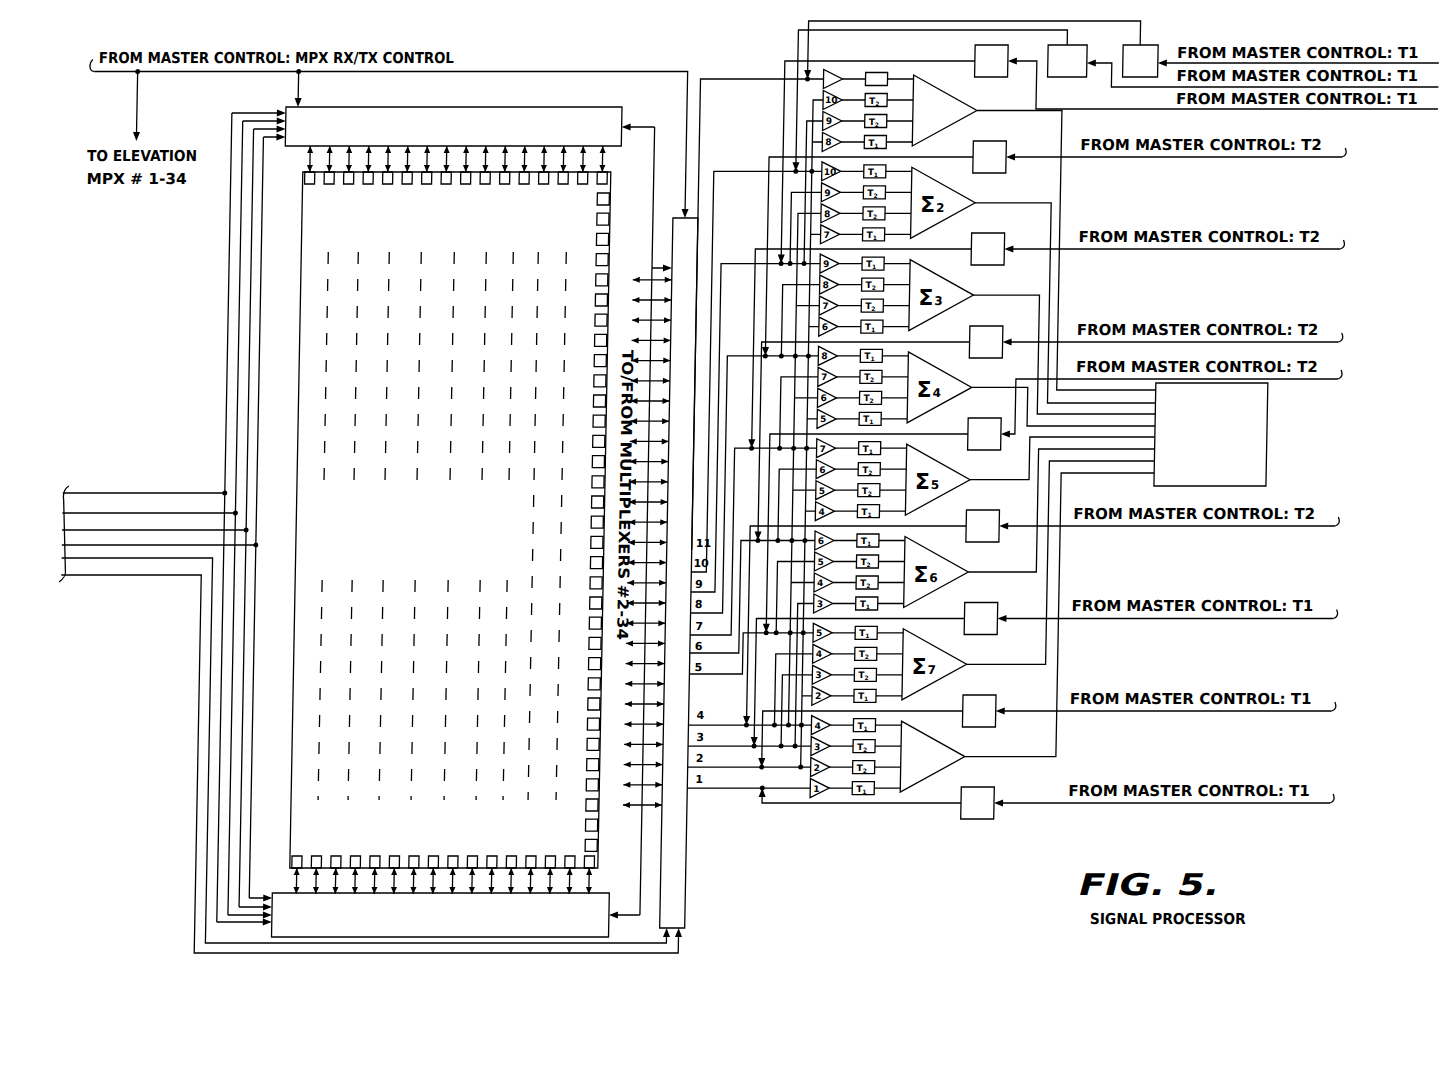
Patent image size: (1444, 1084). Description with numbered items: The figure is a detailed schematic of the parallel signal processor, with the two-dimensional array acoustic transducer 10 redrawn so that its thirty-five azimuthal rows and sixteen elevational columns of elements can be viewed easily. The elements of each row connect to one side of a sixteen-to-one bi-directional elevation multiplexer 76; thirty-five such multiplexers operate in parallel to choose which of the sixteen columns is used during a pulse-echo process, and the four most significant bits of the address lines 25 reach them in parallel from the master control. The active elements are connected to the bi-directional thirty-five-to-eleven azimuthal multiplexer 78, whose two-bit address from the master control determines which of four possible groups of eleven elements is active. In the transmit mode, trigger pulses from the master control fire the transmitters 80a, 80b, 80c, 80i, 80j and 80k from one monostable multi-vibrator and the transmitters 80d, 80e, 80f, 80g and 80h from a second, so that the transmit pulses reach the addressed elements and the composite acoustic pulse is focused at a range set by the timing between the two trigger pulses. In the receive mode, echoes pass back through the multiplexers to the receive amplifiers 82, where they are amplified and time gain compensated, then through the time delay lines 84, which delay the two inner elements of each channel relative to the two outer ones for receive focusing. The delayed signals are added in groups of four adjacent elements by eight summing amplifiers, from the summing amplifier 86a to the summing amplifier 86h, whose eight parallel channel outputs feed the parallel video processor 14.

The two-dimensional array acoustic transducer 10 is at (434, 222).
The parallel video processor 14 is at (1233, 434).
The address lines 25 is at (72, 484).
The elevation multiplexer 76 is at (615, 118).
The azimuthal multiplexer 78 is at (700, 896).
The transmitter 80a is at (1003, 819).
The transmitter 80b is at (1006, 727).
The transmitter 80c is at (1004, 635).
The transmitter 80d is at (1003, 543).
The transmitter 80e is at (995, 450).
The transmitter 80f is at (990, 358).
The transmitter 80g is at (1005, 265).
The transmitter 80h is at (1003, 173).
The transmitter 80i is at (995, 78).
The transmitter 80j is at (1067, 79).
The transmitter 80k is at (1156, 45).
The receive amplifier 82 is at (833, 72).
The time delay line 84 is at (891, 74).
The summing amplifier 86a is at (936, 88).
The summing amplifier 86h is at (928, 795).